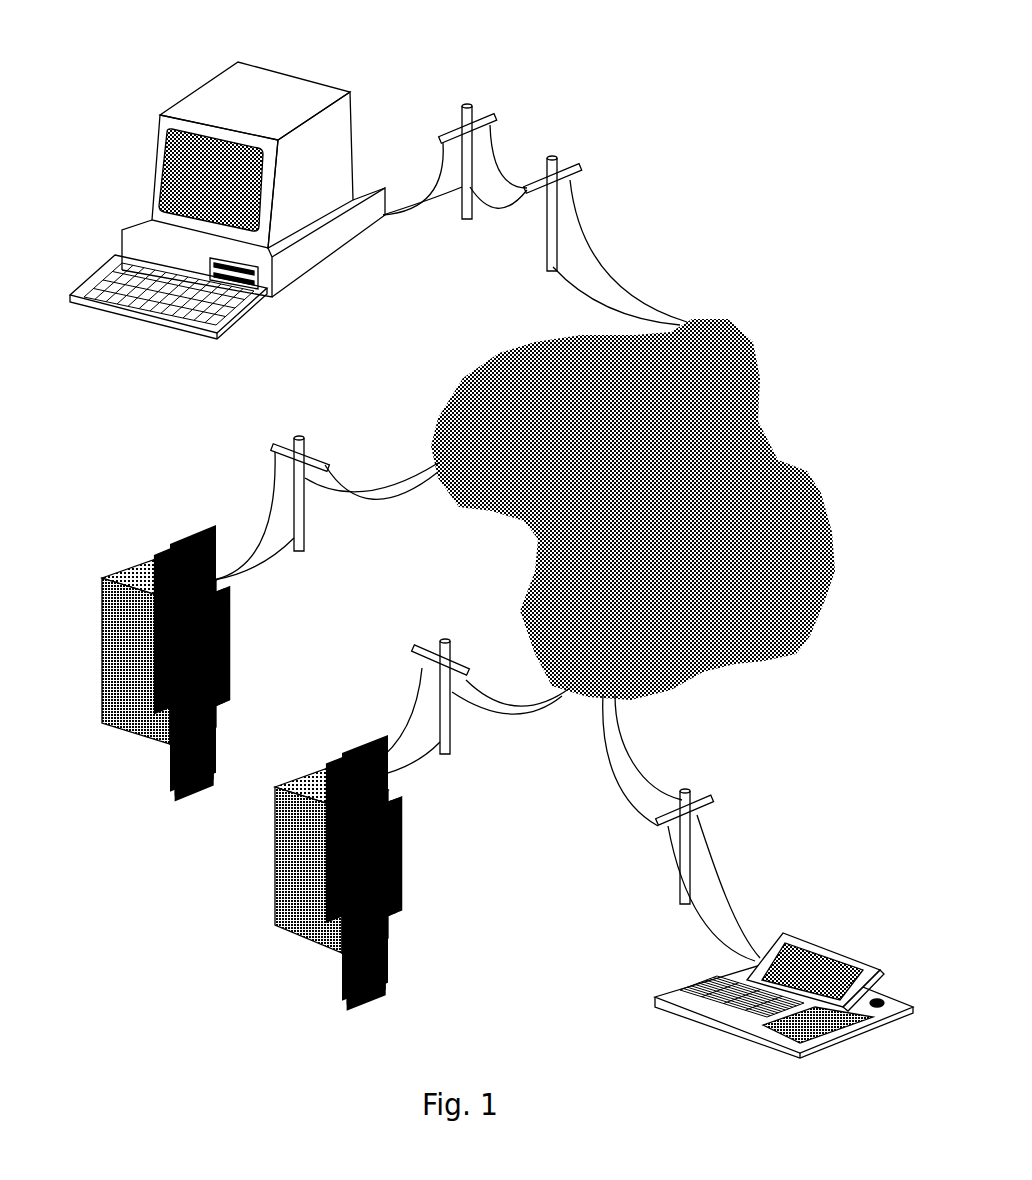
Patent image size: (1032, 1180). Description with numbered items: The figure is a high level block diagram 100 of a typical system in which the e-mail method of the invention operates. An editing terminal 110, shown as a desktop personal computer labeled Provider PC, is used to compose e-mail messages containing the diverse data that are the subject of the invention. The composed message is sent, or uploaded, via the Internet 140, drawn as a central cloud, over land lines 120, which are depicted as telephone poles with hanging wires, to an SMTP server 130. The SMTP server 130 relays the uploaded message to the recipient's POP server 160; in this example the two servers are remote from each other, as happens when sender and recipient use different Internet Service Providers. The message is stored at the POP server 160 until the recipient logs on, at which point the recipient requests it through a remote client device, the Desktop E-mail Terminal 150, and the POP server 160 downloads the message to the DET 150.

The high level block diagram 100 is at (708, 100).
The editing terminal 110 is at (222, 78).
The land lines 120 is at (492, 118).
The SMTP server 130 is at (147, 573).
The Internet 140 is at (739, 360).
The Desktop E-mail Terminal (DET) 150 is at (822, 968).
The POP server 160 is at (285, 923).